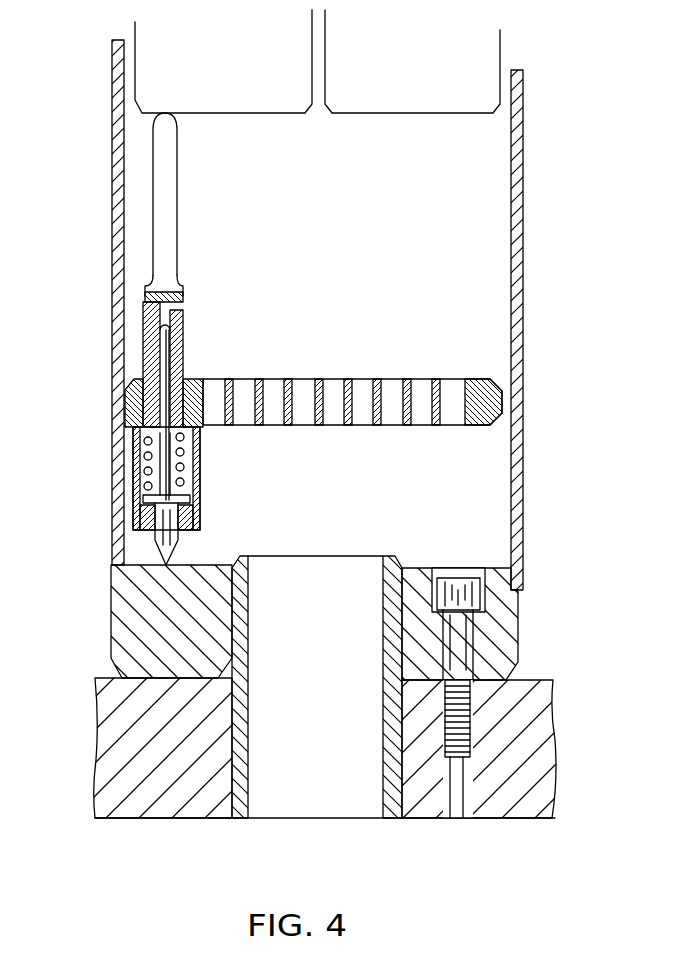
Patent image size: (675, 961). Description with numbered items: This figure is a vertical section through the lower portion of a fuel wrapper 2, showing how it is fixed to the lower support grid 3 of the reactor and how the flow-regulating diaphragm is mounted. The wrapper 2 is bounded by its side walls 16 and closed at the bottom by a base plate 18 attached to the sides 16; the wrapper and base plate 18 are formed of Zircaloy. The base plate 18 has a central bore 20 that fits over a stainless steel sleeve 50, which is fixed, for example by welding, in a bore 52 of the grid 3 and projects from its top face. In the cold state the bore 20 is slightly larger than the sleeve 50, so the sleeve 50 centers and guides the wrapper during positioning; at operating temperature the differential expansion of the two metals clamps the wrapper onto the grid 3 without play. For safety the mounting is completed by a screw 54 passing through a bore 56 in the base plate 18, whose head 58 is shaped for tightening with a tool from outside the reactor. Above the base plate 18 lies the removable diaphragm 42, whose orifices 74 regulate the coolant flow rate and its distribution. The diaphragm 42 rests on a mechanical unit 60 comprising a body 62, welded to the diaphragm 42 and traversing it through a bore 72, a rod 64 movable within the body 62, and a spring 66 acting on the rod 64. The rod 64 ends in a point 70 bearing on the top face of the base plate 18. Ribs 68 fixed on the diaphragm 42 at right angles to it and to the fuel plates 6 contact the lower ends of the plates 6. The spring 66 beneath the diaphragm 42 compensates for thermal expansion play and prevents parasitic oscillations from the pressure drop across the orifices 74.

The wrapper 2 is at (102, 257).
The lower support grid 3 is at (525, 698).
The fuel plate 6 is at (233, 88).
The wall 16 is at (522, 182).
The base plate 18 is at (132, 627).
The central bore 20 is at (384, 570).
The diaphragm 42 is at (478, 380).
The sleeve 50 is at (398, 636).
The bore 52 is at (400, 772).
The screw 54 is at (485, 618).
The bore 56 is at (478, 640).
The head 58 is at (460, 661).
The mechanical unit 60 is at (130, 463).
The body 62 is at (184, 296).
The rod 64 is at (178, 504).
The spring 66 is at (181, 457).
The rib 68 is at (170, 192).
The point 70 is at (170, 551).
The bore 72 is at (183, 365).
The orifice 74 is at (365, 388).